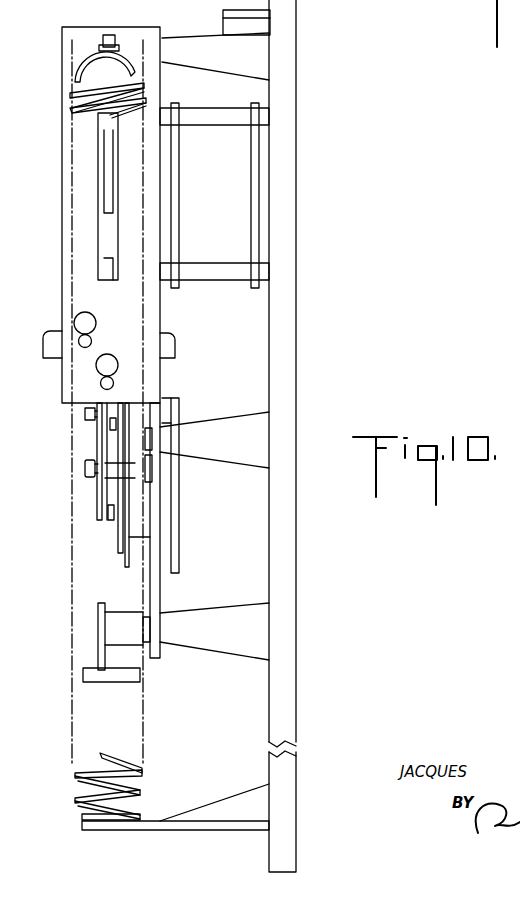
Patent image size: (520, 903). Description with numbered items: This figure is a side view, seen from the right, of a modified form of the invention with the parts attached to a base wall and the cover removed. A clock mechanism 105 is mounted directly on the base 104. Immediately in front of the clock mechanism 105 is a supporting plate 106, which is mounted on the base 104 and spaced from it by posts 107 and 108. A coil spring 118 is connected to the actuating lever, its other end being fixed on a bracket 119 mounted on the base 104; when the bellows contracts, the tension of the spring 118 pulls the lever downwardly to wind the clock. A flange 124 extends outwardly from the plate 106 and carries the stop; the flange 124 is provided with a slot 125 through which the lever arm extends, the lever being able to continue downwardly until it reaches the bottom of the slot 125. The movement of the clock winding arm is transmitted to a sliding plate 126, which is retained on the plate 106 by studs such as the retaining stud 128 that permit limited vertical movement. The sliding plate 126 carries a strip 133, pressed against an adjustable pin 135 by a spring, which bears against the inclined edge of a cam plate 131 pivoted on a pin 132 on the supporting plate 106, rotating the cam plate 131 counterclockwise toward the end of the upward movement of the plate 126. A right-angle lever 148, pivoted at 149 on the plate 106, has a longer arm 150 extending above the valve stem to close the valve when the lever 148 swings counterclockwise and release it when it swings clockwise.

The base 104 is at (297, 240).
The clock mechanism 105 is at (235, 187).
The supporting plate 106 is at (160, 596).
The post 107 is at (245, 425).
The post 108 is at (210, 14).
The coil spring 118 is at (72, 93).
The bracket 119 is at (90, 826).
The flange 124 is at (62, 195).
The slot 125 is at (98, 155).
The sliding plate 126 is at (125, 567).
The retaining stud 128 is at (107, 520).
The cam plate 131 is at (100, 443).
The pin 132 is at (85, 412).
The strip 133 is at (120, 555).
The adjustable pin 135 is at (110, 424).
The right-angle lever 148 is at (98, 652).
The pivot 149 is at (122, 613).
The longer arm 150 is at (128, 668).